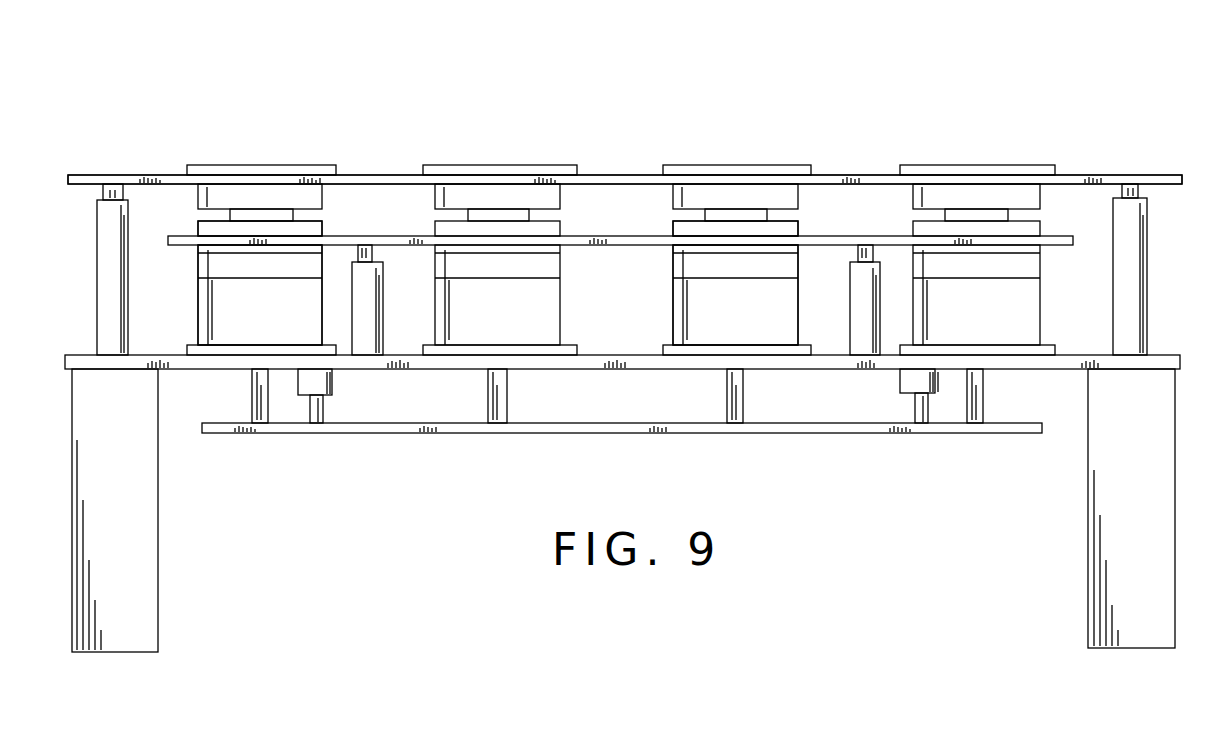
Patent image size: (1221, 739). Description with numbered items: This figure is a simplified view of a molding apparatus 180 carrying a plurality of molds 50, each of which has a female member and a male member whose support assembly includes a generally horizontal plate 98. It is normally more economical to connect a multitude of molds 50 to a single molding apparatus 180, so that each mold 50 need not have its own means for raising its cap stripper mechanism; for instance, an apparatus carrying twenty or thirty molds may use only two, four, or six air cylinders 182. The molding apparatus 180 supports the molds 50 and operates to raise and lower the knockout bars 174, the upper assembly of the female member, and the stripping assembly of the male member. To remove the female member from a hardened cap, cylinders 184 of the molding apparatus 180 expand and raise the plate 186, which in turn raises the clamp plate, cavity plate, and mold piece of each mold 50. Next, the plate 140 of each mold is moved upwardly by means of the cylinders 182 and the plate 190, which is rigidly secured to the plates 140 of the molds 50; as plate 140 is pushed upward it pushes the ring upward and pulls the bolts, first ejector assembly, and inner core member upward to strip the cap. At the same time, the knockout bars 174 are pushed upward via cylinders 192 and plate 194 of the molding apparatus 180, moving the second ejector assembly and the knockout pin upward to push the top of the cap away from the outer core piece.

The molding apparatus 180 is at (242, 111).
The plate 186 is at (157, 175).
The mold 50 is at (291, 163).
The plate 140 is at (198, 232).
The plate 190 is at (397, 236).
The cylinders 184 is at (100, 268).
The plate 98 is at (200, 275).
The air cylinders 182 is at (377, 311).
The knockout bars 174 is at (255, 395).
The cylinders 192 is at (333, 383).
The plate 194 is at (400, 431).